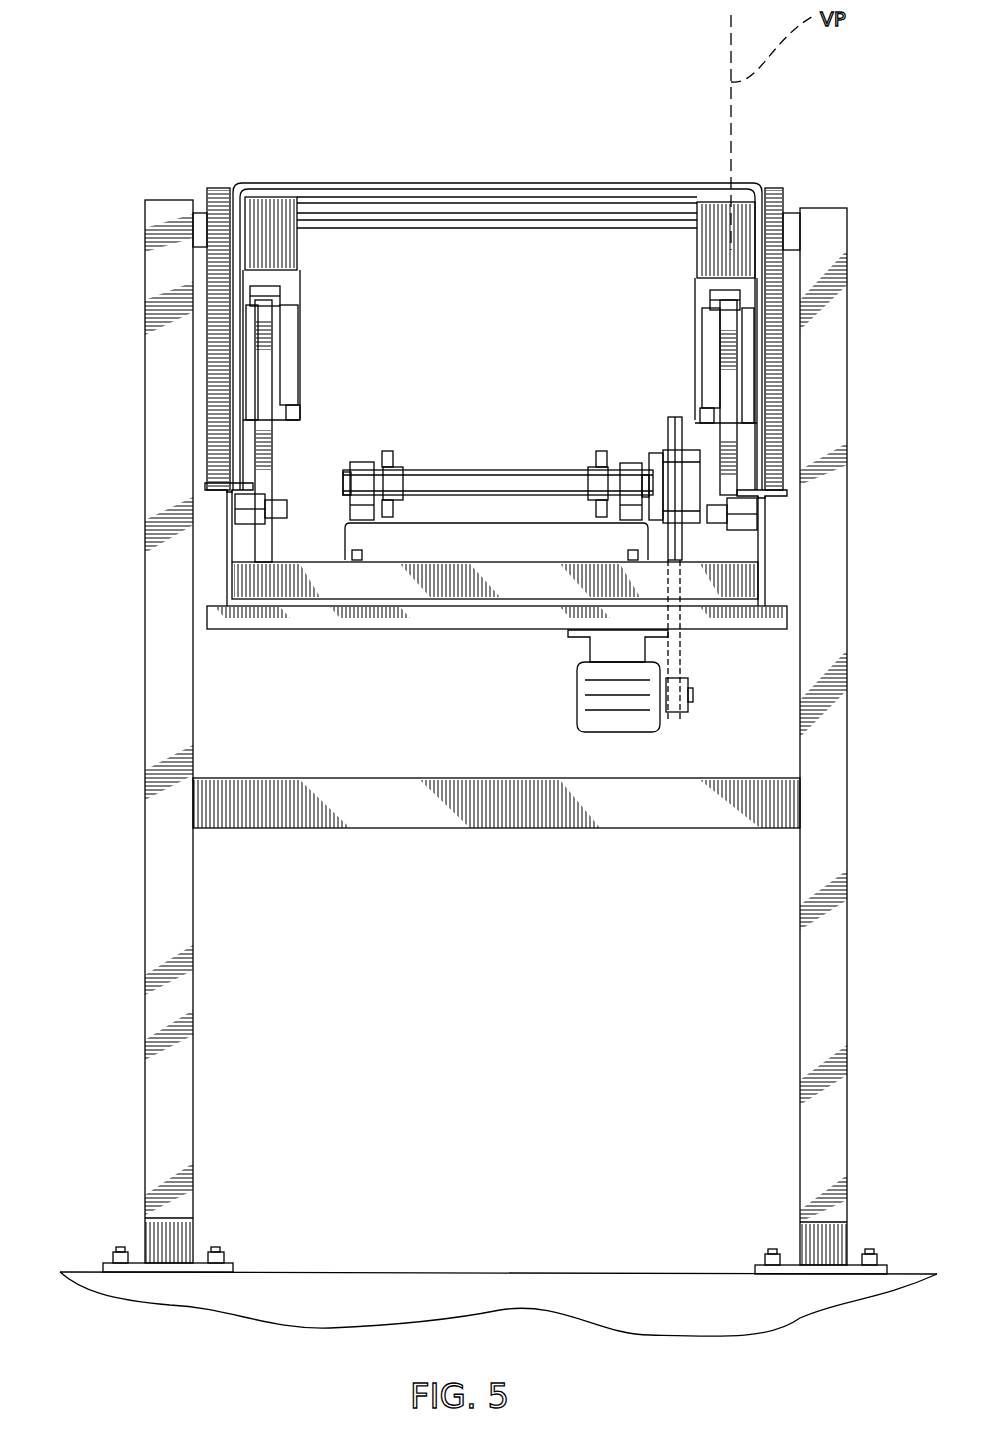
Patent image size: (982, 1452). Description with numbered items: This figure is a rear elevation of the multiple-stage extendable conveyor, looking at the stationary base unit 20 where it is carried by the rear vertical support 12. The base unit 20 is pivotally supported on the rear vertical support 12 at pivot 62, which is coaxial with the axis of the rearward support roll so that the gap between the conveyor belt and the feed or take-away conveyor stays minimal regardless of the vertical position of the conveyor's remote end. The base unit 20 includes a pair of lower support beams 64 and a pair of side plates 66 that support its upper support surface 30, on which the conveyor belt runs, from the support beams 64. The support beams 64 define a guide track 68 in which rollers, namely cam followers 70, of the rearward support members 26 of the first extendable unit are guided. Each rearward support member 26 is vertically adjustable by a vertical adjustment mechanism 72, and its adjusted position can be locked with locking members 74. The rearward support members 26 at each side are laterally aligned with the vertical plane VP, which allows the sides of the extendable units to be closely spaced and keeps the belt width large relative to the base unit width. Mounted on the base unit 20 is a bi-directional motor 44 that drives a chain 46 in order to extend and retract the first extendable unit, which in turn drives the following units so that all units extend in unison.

The rear vertical support 12 is at (192, 912).
The stationary base unit 20 is at (422, 630).
The rearward support member 26 is at (293, 456).
The upper support surface 30 is at (450, 185).
The bi-directional motor 44 is at (618, 735).
The chain 46 is at (585, 453).
The pivot 62 is at (193, 213).
The lower support beam 64 is at (227, 560).
The side plate 66 is at (208, 343).
The guide track 68 is at (237, 500).
The cam follower 70 is at (262, 522).
The vertical adjustment mechanism 72 is at (268, 290).
The locking member 74 is at (293, 400).